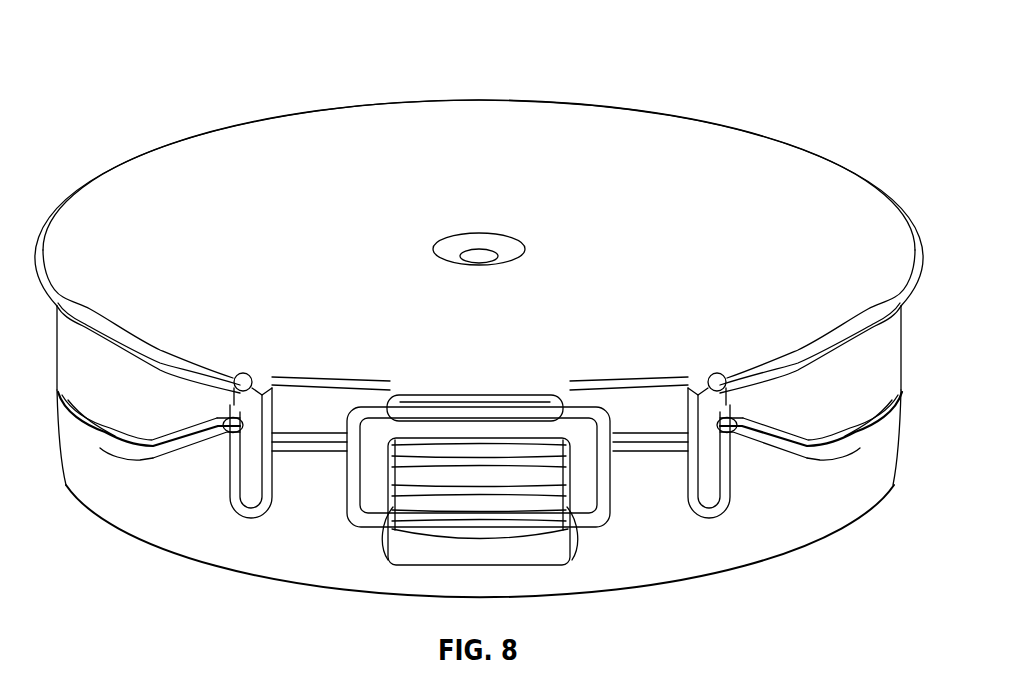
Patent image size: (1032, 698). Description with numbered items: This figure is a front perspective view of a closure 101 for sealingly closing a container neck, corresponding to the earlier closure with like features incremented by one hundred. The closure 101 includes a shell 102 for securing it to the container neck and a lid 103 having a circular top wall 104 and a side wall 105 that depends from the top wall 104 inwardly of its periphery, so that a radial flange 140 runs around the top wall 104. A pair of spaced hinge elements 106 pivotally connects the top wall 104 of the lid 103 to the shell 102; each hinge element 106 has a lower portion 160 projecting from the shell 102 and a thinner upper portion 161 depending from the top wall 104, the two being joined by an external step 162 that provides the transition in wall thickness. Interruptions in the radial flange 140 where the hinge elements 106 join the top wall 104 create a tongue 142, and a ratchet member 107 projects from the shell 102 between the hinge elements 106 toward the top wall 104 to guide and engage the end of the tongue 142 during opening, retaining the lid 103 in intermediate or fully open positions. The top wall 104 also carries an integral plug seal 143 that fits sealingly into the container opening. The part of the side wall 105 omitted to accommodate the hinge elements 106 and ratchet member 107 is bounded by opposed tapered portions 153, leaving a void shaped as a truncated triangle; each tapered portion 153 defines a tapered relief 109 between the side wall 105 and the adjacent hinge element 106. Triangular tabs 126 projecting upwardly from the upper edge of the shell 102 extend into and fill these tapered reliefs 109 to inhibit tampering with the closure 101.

The closure 101 is at (802, 69).
The shell 102 is at (877, 496).
The lid 103 is at (85, 175).
The top wall 104 is at (500, 219).
The side wall 105 is at (128, 401).
The hinge element 106 is at (253, 481).
The ratchet member 107 is at (581, 494).
The tapered relief 109 is at (190, 418).
The triangular tab 126 is at (223, 481).
The radial flange 140 is at (897, 250).
The tongue 142 is at (478, 404).
The plug seal 143 is at (383, 438).
The tapered portion 153 is at (167, 436).
The lower portion 160 is at (332, 502).
The upper portion 161 is at (342, 427).
The external step 162 is at (283, 442).